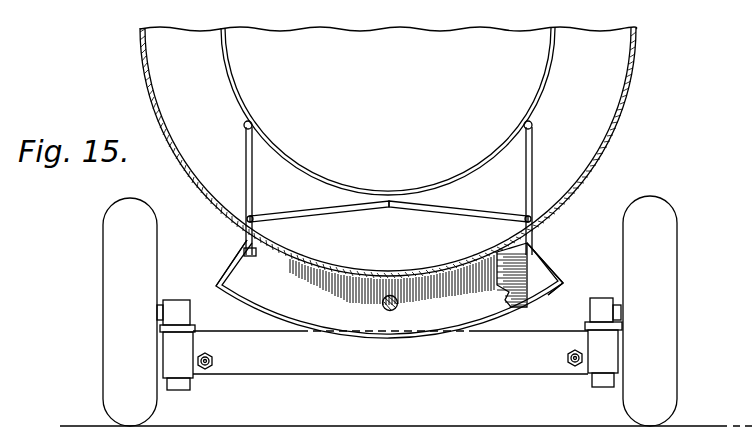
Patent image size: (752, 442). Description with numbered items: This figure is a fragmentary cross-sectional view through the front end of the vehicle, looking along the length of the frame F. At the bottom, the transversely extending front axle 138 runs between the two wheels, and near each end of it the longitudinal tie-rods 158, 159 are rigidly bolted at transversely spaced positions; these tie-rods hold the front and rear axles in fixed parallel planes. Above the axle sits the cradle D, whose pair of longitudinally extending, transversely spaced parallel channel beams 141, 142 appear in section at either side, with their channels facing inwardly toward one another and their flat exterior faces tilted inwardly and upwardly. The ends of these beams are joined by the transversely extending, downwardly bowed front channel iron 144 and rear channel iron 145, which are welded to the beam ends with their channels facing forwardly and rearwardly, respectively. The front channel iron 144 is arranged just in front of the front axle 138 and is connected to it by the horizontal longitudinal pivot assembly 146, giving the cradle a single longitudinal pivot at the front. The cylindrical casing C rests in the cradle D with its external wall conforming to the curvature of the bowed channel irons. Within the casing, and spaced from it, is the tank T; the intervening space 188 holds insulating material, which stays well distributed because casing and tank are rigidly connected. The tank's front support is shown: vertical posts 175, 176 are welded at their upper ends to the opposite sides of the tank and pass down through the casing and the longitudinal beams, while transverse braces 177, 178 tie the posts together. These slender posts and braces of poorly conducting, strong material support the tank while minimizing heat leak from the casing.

The front axle 138 is at (478, 358).
The channel beam 141 is at (565, 279).
The channel beam 142 is at (238, 262).
The front channel iron 144 is at (298, 303).
The rear channel iron 145 is at (540, 292).
The pivot assembly 146 is at (390, 311).
The tie-rod 158 is at (573, 367).
The tie-rod 159 is at (208, 369).
The vertical post 175 is at (534, 147).
The vertical post 176 is at (246, 163).
The transverse brace 177 is at (453, 210).
The transverse brace 178 is at (330, 208).
The intervening space 188 is at (590, 57).
The casing C is at (628, 104).
The tank T is at (551, 63).
The cradle D is at (556, 262).
The frame F is at (309, 377).